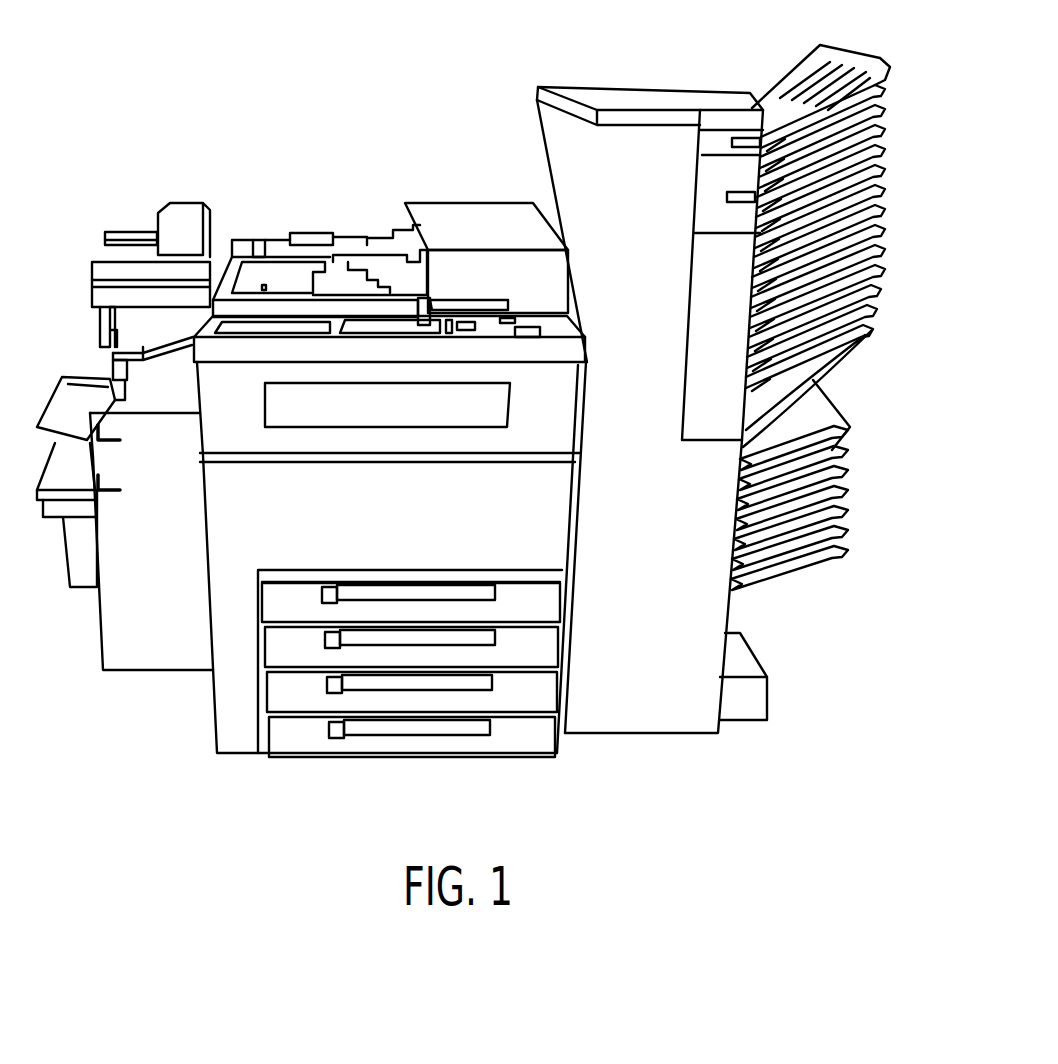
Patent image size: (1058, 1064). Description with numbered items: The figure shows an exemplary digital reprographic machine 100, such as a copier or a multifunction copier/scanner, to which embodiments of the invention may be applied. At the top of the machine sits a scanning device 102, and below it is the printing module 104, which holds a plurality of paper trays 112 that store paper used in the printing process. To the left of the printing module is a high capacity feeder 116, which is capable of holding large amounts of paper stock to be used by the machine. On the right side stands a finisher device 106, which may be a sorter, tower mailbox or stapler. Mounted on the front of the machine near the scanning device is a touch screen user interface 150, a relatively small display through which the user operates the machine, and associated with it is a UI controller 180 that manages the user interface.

The digital reprographic machine 100 is at (305, 117).
The scanning device 102 is at (308, 242).
The printing module 104 is at (213, 752).
The finisher device 106 is at (668, 737).
The paper trays 112 is at (525, 757).
The high capacity feeder 116 is at (163, 672).
The touch screen user interface 150 is at (365, 335).
The UI controller 180 is at (447, 323).